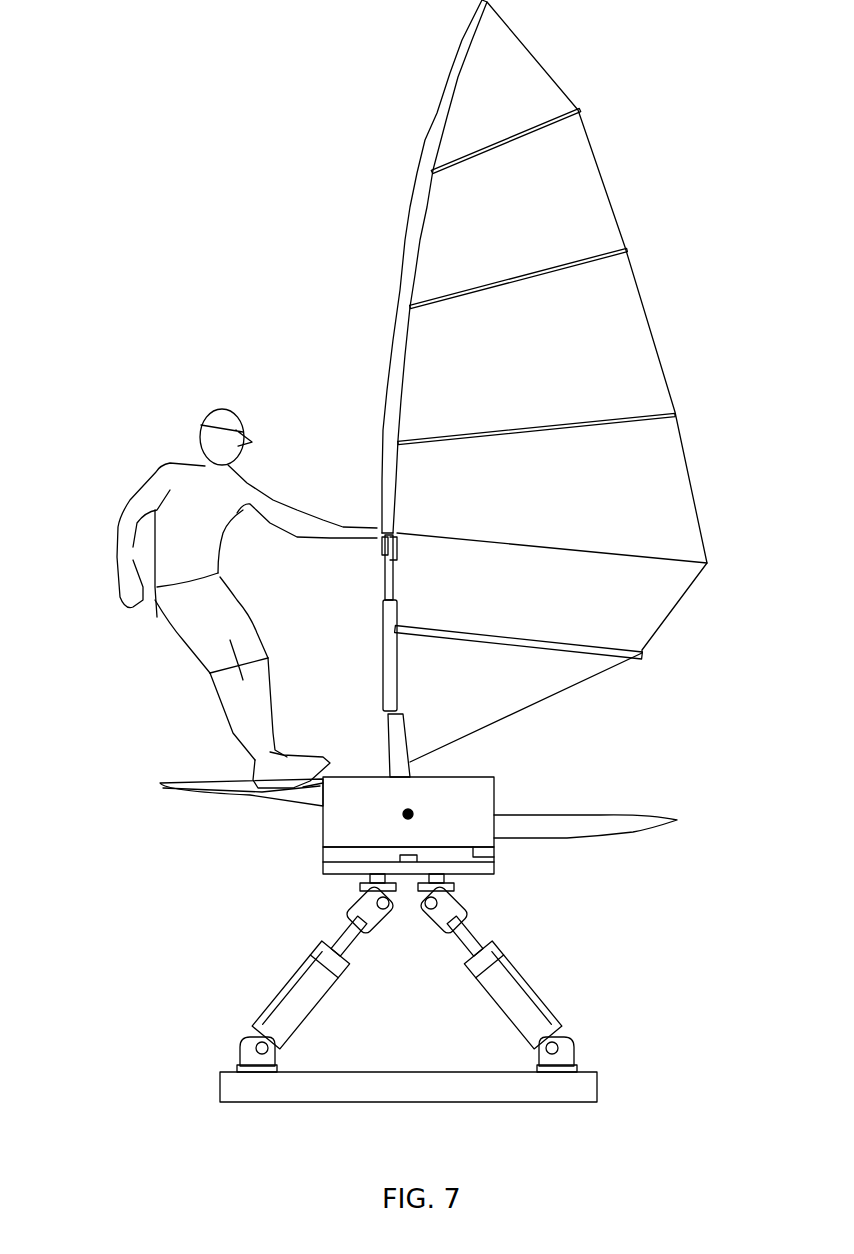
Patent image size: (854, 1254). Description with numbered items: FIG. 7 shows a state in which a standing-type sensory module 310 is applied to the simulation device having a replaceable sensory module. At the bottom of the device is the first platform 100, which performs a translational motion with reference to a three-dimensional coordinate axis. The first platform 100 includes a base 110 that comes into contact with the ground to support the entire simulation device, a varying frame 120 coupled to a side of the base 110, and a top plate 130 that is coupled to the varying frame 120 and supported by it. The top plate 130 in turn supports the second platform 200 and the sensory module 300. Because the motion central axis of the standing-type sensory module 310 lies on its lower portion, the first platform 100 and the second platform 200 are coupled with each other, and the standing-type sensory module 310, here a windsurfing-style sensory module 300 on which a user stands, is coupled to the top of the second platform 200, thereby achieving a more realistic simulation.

The first platform 100 is at (332, 975).
The base 110 is at (367, 1087).
The varying frame 120 is at (293, 973).
The top plate 130 is at (323, 866).
The second platform 200 is at (497, 842).
The sensory module 300 is at (433, 419).
The standing-type sensory module 310 is at (623, 818).